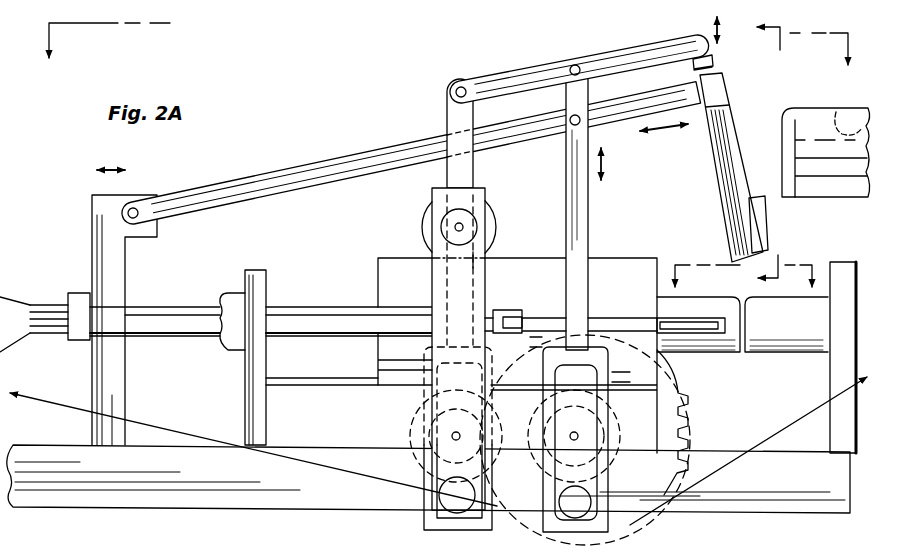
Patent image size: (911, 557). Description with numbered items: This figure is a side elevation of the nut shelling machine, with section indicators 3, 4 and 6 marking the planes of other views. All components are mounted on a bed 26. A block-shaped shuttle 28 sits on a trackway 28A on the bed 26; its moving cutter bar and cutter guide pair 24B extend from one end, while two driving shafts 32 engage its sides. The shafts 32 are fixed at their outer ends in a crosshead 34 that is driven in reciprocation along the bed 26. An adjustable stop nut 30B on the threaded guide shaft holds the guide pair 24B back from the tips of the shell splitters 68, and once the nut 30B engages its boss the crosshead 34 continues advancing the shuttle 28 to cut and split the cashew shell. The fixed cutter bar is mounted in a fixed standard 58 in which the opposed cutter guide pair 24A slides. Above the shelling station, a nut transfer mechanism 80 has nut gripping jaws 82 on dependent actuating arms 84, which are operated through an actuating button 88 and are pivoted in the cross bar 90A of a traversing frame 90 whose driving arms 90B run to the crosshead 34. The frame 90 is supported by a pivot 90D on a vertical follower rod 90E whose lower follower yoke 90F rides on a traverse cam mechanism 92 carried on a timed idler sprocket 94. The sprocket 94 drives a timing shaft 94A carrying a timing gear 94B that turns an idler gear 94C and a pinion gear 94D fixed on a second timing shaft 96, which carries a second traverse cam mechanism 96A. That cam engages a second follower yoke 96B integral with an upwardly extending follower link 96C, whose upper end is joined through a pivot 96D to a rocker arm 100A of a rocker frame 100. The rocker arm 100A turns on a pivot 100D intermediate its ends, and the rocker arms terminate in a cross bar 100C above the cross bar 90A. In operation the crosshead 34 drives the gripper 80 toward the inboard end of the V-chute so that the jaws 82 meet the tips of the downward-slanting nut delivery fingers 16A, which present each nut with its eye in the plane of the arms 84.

The nut delivery fingers 16A is at (780, 188).
The cutter guide pair 24A is at (803, 360).
The cutter guide pair 24B is at (690, 360).
The bed 26 is at (190, 474).
The shuttle 28 is at (517, 268).
The trackway 28A is at (270, 416).
The adjustable stop nut 30B is at (233, 281).
The driving shafts 32 is at (332, 325).
The crosshead 34 is at (105, 258).
The fixed block or standard 58 is at (843, 272).
The shell splitters 68 is at (695, 330).
The nut transfer mechanism 80 is at (521, 58).
The nut gripping jaws 82 is at (757, 228).
The actuating arms 84 is at (727, 165).
The actuating button 88 is at (693, 71).
The traversing frame member 90 is at (136, 208).
The cross bar 90A is at (722, 97).
The driving arms 90B is at (259, 183).
The pivot 90D is at (575, 126).
The vertical follower rod 90E is at (566, 213).
The follower yoke 90F is at (491, 336).
The traverse cam mechanism 92 is at (592, 448).
The timed idler sprocket 94 is at (668, 480).
The timing shaft 94A is at (582, 434).
The timing gear 94B is at (497, 506).
The idler gear 94C is at (488, 520).
The pinion gear 94D is at (428, 453).
The timing shaft 96 is at (452, 436).
The second timed transverse cam mechanism 96A is at (400, 500).
The second follower yoke 96B is at (430, 396).
The second follower link 96C is at (455, 122).
The pivot 96D is at (459, 86).
The rocker frame 100 is at (599, 52).
The rocker arm 100A is at (490, 86).
The cross bar 100C is at (713, 52).
The pivot 100D is at (576, 65).
The section line 3 is at (744, 279).
The section line 4 is at (758, 152).
The section line 6 is at (451, 45).